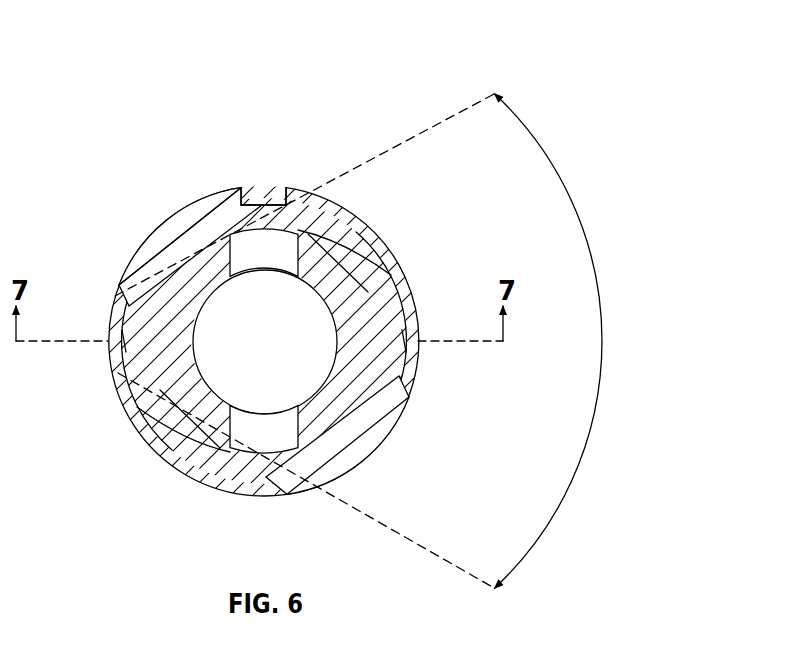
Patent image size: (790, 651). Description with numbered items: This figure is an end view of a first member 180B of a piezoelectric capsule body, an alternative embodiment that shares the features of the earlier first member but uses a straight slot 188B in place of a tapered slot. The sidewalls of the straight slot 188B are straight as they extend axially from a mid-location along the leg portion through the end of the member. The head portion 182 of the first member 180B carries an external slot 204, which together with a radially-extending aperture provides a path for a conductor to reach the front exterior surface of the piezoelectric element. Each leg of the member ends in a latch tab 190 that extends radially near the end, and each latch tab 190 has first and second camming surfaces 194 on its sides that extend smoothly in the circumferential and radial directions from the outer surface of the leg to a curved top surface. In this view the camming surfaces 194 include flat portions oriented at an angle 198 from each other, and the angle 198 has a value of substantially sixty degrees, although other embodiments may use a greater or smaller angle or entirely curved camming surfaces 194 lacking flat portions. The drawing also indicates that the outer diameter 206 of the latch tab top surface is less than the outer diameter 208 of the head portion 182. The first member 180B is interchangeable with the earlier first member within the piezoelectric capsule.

The outer diameter of head portion 208 is at (110, 340).
The outer diameter of top surface 206 is at (410, 300).
The external slot 204 is at (268, 205).
The straight slot 188B is at (278, 252).
The first member 180B is at (143, 242).
The head portion 182 is at (133, 270).
The latch tab 190 is at (130, 352).
The camming surfaces 194 is at (390, 283).
The angle 198 is at (603, 345).